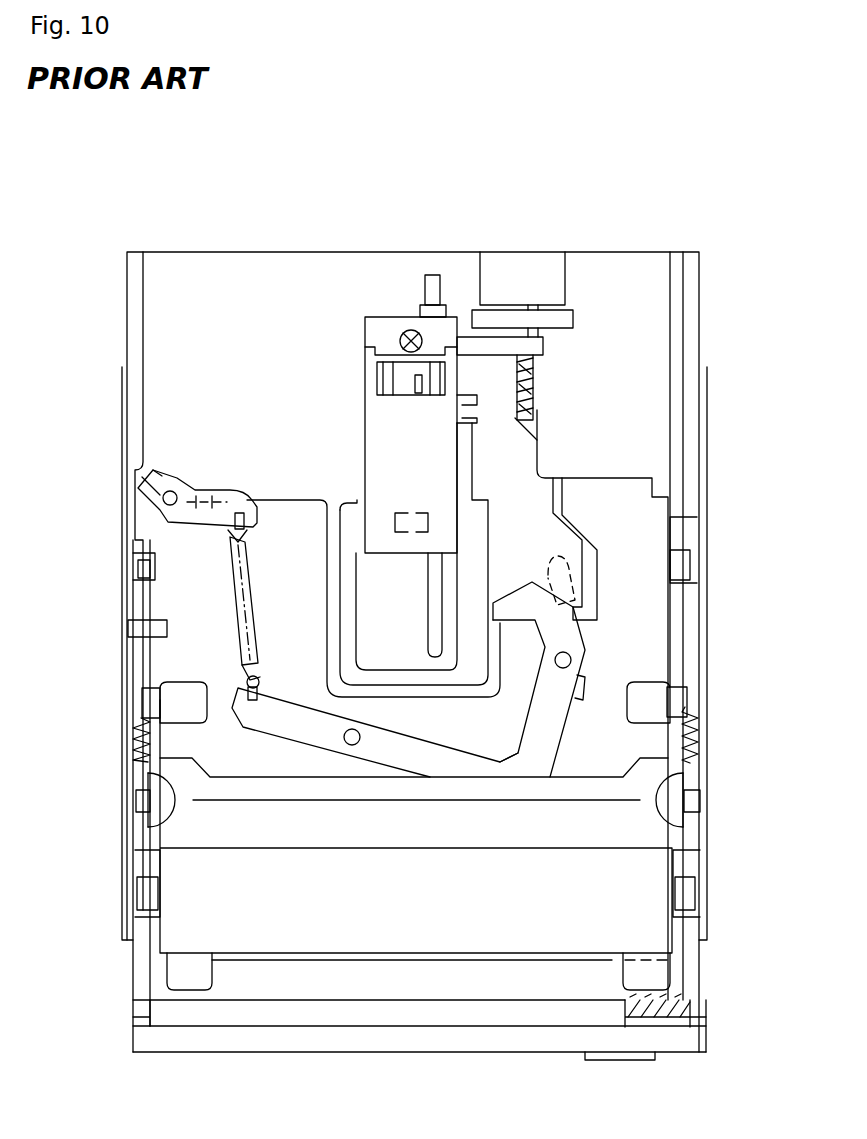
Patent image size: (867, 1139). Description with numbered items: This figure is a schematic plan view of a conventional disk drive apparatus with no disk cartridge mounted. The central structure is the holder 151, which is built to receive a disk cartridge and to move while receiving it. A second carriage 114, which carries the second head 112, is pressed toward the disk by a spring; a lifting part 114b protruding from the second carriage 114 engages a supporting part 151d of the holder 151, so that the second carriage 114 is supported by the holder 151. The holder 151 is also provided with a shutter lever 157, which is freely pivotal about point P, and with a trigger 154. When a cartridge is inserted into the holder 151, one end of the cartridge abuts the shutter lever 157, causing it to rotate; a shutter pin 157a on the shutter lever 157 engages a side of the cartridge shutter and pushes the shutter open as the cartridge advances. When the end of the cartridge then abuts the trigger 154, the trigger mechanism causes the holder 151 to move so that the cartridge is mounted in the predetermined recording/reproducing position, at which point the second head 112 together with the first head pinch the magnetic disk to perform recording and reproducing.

The holder 151 is at (657, 620).
The supporting part 151d is at (505, 459).
The second carriage 114 is at (380, 423).
The second head 112 is at (397, 513).
The lifting part 114b is at (470, 413).
The trigger 154 is at (203, 488).
The shutter lever 157 is at (553, 730).
The shutter pin 157a is at (547, 572).
The pivot point P is at (368, 738).